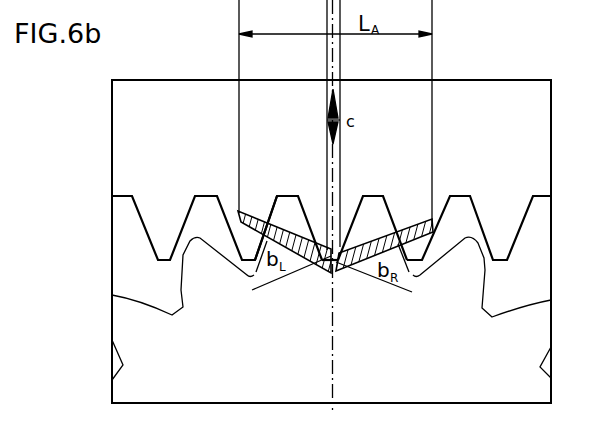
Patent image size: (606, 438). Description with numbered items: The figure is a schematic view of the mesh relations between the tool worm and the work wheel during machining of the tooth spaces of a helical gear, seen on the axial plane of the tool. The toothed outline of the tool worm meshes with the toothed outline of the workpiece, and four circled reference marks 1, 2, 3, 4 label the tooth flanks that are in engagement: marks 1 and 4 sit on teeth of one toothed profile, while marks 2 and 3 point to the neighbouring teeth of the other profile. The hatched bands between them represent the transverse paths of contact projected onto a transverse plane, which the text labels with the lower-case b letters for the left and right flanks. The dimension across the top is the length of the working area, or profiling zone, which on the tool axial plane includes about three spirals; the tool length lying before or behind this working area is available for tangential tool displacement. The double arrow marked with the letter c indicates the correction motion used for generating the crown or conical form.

The tooth flank of mating gear (left) 1 is at (189, 276).
The tooth flank (left) 2 is at (283, 215).
The tooth flank (right) 3 is at (374, 220).
The tooth flank of mating gear (right) 4 is at (474, 277).